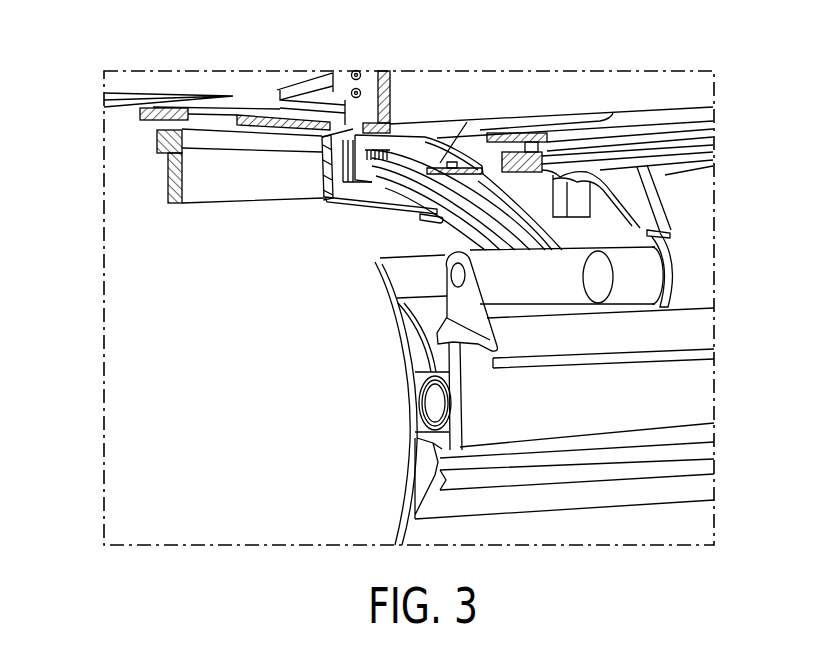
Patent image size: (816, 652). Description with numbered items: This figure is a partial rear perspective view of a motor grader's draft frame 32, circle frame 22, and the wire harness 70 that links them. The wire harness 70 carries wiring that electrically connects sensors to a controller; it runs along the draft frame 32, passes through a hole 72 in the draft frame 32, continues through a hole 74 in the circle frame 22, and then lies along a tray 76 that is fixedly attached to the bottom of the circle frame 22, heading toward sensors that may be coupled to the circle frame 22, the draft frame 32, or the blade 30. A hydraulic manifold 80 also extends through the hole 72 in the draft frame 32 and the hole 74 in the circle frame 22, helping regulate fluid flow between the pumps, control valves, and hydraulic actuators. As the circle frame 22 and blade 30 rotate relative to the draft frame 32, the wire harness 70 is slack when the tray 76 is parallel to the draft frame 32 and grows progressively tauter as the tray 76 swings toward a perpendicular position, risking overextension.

The circle frame 22 is at (152, 122).
The blade 30 is at (395, 340).
The draft frame 32 is at (443, 90).
The wire harness 70 is at (395, 190).
The hole 72 is at (373, 70).
The hole 74 is at (347, 130).
The tray 76 is at (405, 215).
The hydraulic manifold 80 is at (350, 72).